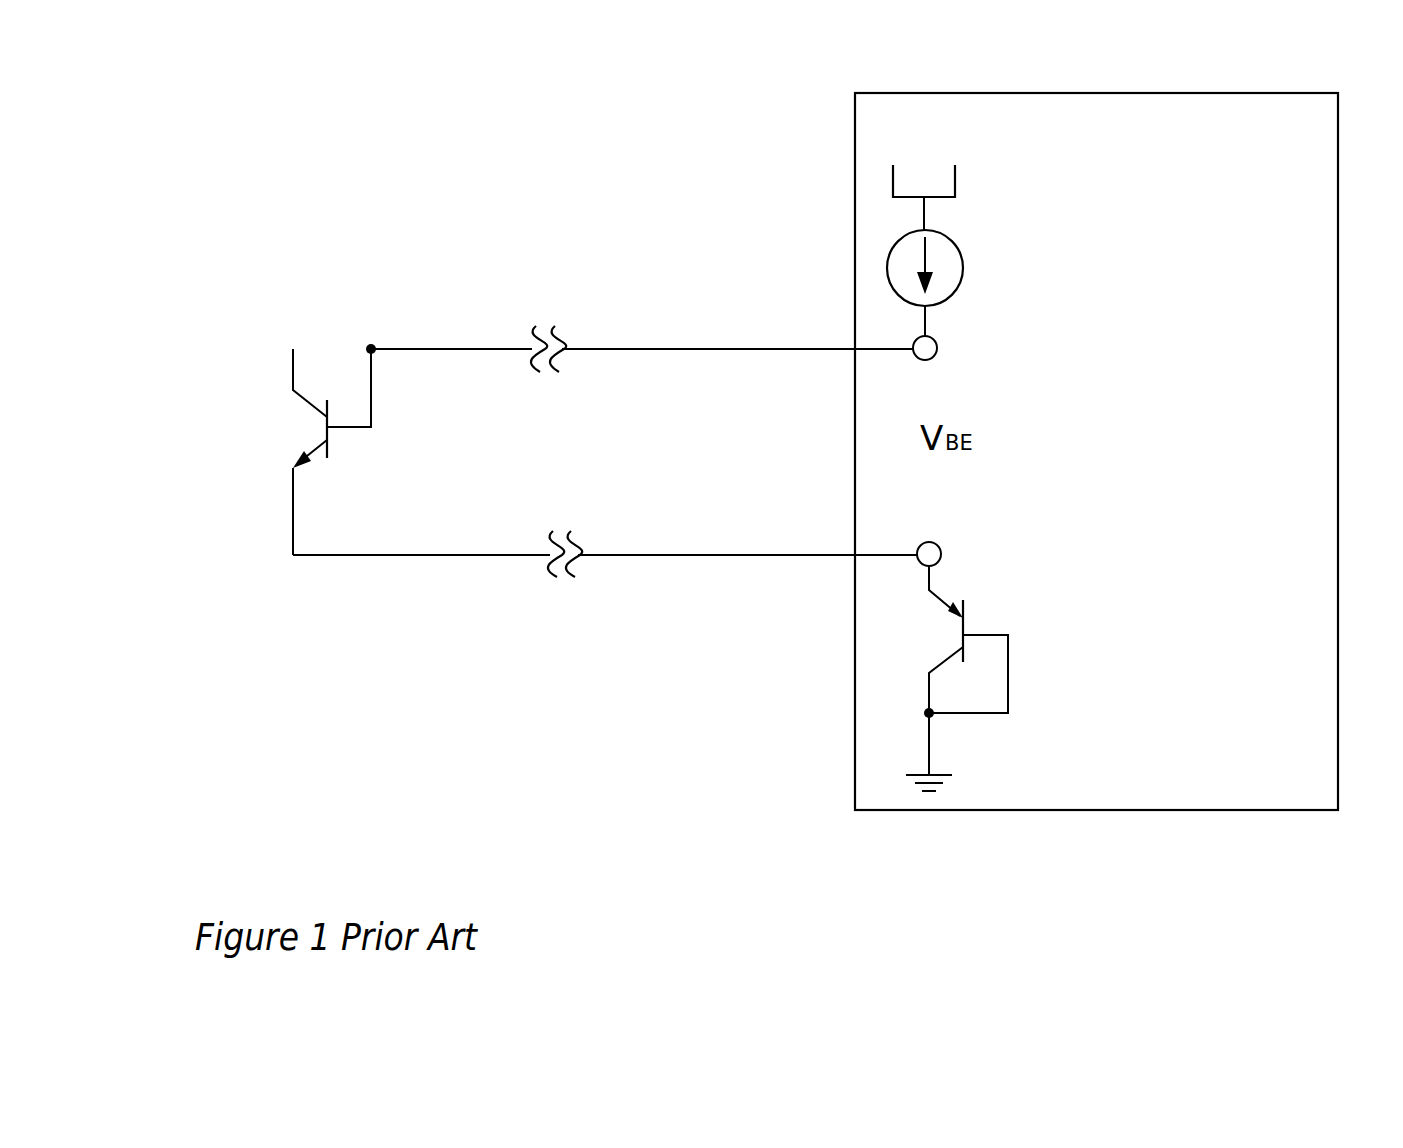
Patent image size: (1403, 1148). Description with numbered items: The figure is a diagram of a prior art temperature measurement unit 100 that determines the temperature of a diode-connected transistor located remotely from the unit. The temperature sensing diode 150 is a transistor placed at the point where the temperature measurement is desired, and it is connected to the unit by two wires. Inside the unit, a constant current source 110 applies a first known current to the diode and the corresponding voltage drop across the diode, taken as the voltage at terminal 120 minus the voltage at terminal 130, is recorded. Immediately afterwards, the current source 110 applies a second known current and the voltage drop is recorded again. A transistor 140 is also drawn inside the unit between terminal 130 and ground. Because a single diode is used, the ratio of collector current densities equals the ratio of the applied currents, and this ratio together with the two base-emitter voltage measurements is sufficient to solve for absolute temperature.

The temperature measurement unit 100 is at (1113, 146).
The constant current source 110 is at (962, 262).
The terminal V 120 is at (937, 345).
The terminal V 130 is at (941, 550).
The transistor inside unit 140 is at (963, 625).
The temperature sensing diode 150 is at (322, 435).